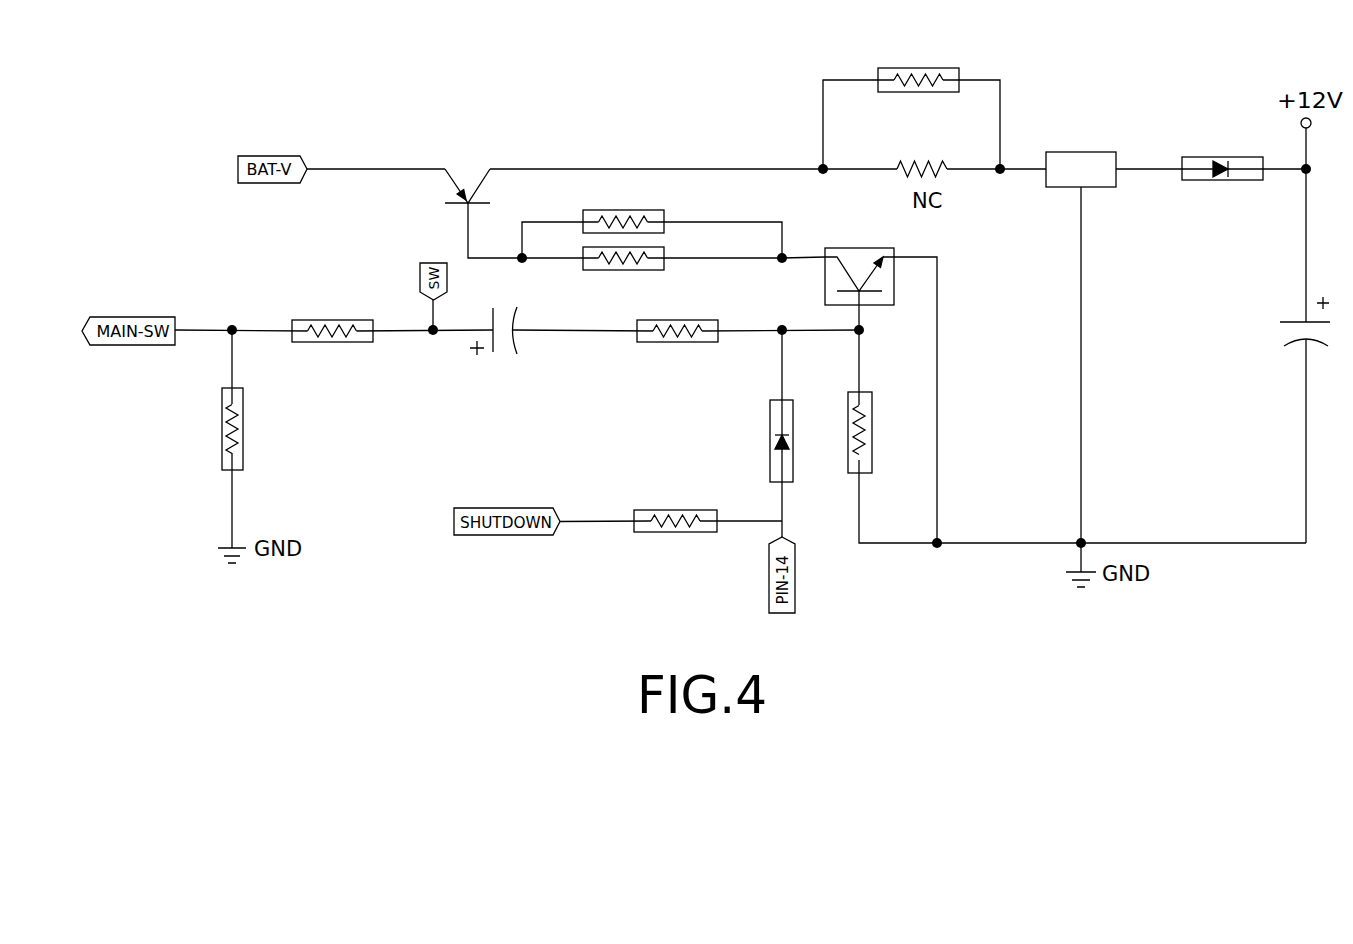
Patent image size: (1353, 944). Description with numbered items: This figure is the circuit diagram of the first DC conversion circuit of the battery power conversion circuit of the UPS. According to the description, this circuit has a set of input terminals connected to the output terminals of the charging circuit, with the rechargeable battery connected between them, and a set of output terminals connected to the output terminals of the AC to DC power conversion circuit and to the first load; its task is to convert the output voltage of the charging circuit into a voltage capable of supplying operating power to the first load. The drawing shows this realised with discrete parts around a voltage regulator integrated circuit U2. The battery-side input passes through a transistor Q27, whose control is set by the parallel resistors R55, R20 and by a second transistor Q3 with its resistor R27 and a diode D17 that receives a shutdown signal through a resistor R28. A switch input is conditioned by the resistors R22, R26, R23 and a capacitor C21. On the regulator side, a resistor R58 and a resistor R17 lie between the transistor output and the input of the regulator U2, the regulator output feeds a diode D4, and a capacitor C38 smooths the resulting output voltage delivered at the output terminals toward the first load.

The resistor 866K R22 is at (335, 332).
The resistor 200K R26 is at (230, 432).
The capacitor 2.2uF/50V C21 is at (500, 334).
The resistor 49.9K R23 is at (675, 358).
The PNP transistor 2SA1020 Q27 is at (466, 153).
The resistor 7.5K R55 is at (663, 206).
The resistor 7.5K R20 is at (663, 272).
The NPN transistor 2222SM Q3 is at (859, 262).
The resistor 5.6K R27 is at (889, 438).
The diode 1N4148WSM D17 is at (779, 434).
The resistor 2K R28 is at (669, 521).
The resistor 1.2 ohm R58 is at (925, 46).
The resistor not connected R17 is at (922, 152).
The voltage regulator MC7812 U2 is at (1086, 147).
The diode SS14SM D4 is at (1222, 170).
The capacitor 100uF/25V C38 is at (1306, 324).